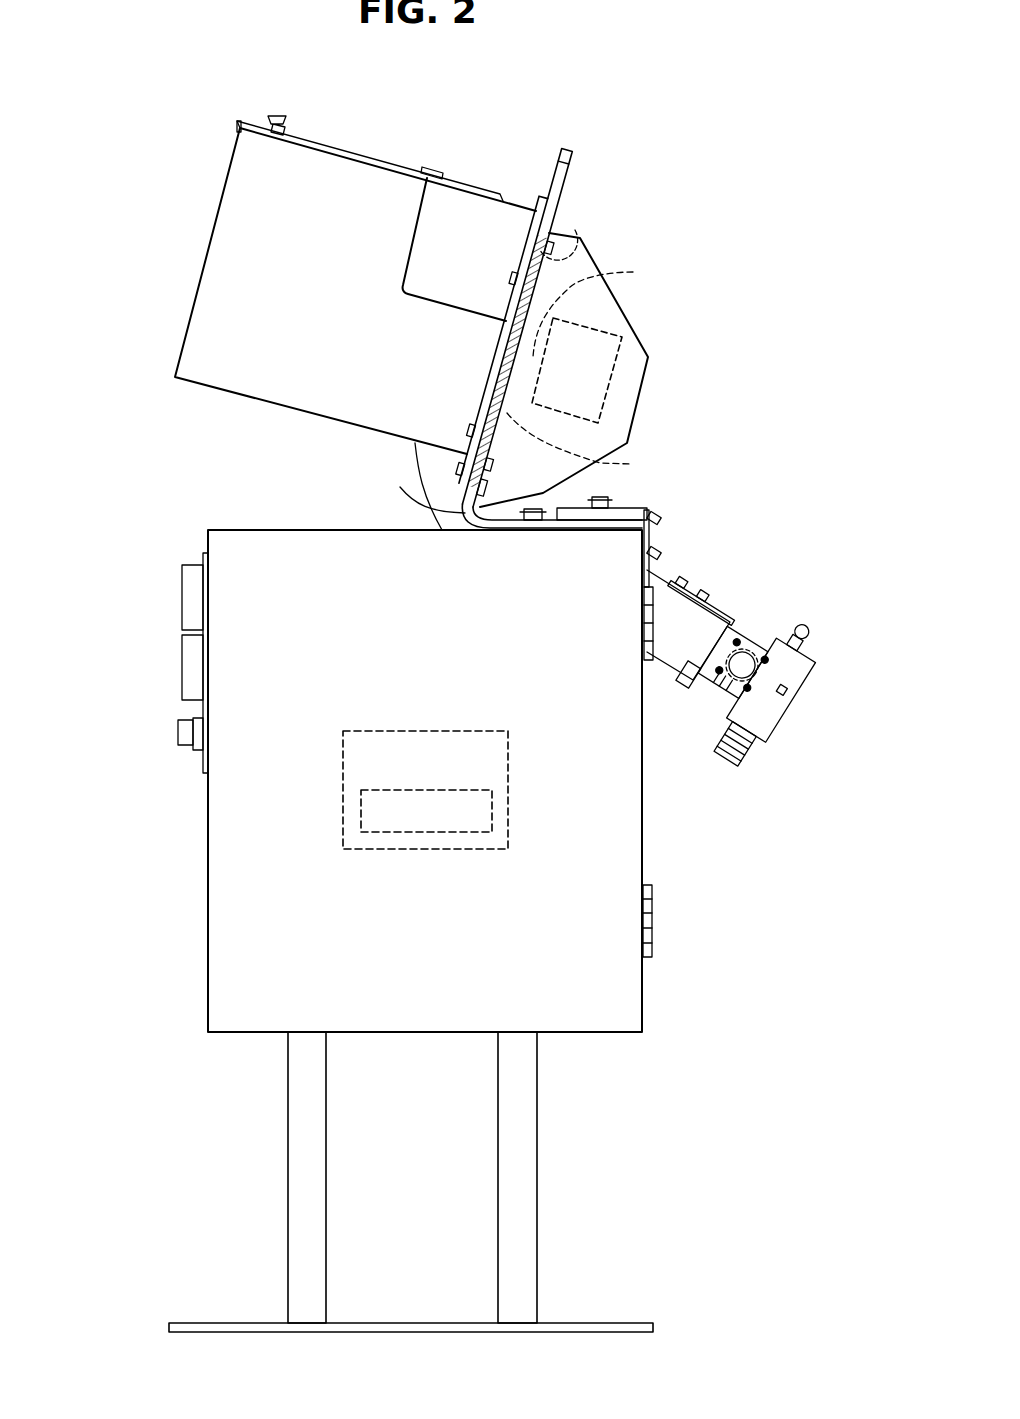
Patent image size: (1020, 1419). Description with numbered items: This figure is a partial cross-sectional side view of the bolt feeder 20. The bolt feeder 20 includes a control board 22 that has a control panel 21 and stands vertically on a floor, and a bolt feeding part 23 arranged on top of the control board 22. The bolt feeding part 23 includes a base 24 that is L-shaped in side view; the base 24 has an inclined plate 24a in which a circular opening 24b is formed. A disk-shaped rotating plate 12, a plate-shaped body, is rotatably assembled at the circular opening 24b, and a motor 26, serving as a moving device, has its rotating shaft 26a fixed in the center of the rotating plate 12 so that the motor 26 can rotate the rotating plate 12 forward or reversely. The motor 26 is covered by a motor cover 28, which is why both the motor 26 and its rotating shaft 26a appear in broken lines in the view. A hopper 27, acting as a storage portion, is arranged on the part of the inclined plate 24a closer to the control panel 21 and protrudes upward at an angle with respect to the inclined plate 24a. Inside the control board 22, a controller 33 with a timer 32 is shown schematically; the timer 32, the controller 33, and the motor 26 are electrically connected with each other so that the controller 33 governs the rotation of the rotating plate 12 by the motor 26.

The rotating plate 12 is at (630, 464).
The bolt feeder 20 is at (131, 490).
The control panel 21 is at (203, 709).
The control board 22 is at (236, 898).
The bolt feeding part 23 is at (549, 109).
The base 24 is at (420, 499).
The inclined plate 24a is at (561, 173).
The circular opening 24b is at (575, 230).
The motor 26 is at (598, 322).
The rotating shaft 26a is at (633, 272).
The hopper 27 is at (243, 214).
The motor cover 28 is at (646, 339).
The timer 32 is at (493, 807).
The controller 33 is at (427, 731).